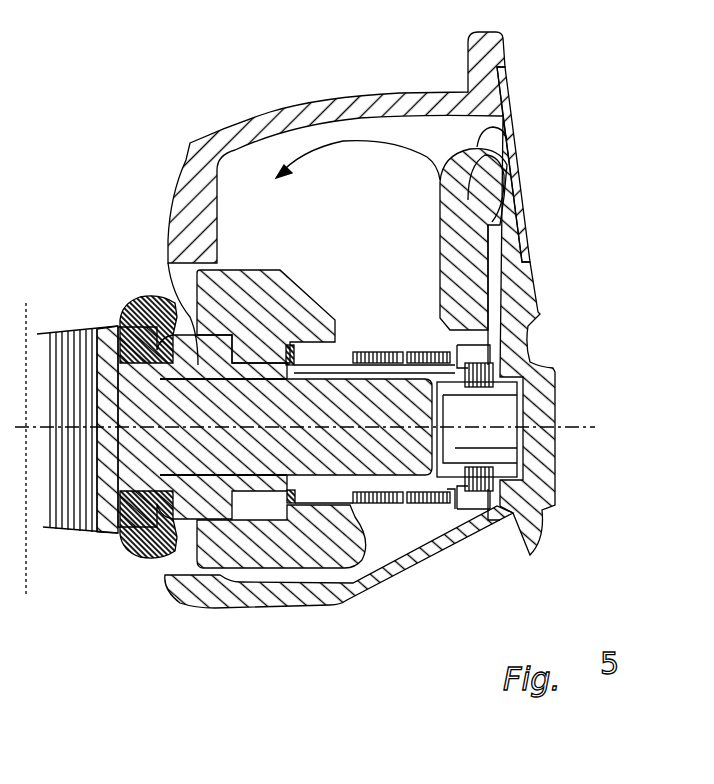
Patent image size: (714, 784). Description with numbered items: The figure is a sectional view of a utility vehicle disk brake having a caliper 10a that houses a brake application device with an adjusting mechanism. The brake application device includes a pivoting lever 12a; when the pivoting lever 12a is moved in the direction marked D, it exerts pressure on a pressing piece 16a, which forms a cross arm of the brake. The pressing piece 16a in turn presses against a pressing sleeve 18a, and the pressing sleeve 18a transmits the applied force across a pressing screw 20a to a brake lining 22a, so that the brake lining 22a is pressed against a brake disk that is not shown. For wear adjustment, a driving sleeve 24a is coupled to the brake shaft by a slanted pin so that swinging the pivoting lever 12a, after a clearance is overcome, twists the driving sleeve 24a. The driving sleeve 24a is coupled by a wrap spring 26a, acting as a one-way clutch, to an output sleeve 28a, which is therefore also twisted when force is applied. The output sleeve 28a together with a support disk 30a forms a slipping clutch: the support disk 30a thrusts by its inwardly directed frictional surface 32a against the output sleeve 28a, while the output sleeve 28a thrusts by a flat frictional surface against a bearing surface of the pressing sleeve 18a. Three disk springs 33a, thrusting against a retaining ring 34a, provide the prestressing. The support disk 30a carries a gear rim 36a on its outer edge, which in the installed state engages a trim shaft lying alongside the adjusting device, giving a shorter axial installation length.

The caliper 10a is at (270, 113).
The pivoting lever 12a is at (508, 124).
The pressing piece 16a is at (272, 582).
The pressing sleeve 18a is at (177, 550).
The pressing screw 20a is at (185, 305).
The brake lining 22a is at (80, 536).
The driving sleeve 24a is at (352, 598).
The wrap spring 26a is at (415, 360).
The output sleeve 28a is at (440, 465).
The support disk 30a is at (490, 480).
The frictional surface 32a is at (450, 495).
The disk springs 33a is at (493, 368).
The retaining ring 34a is at (490, 493).
The gear rim 36a is at (497, 490).